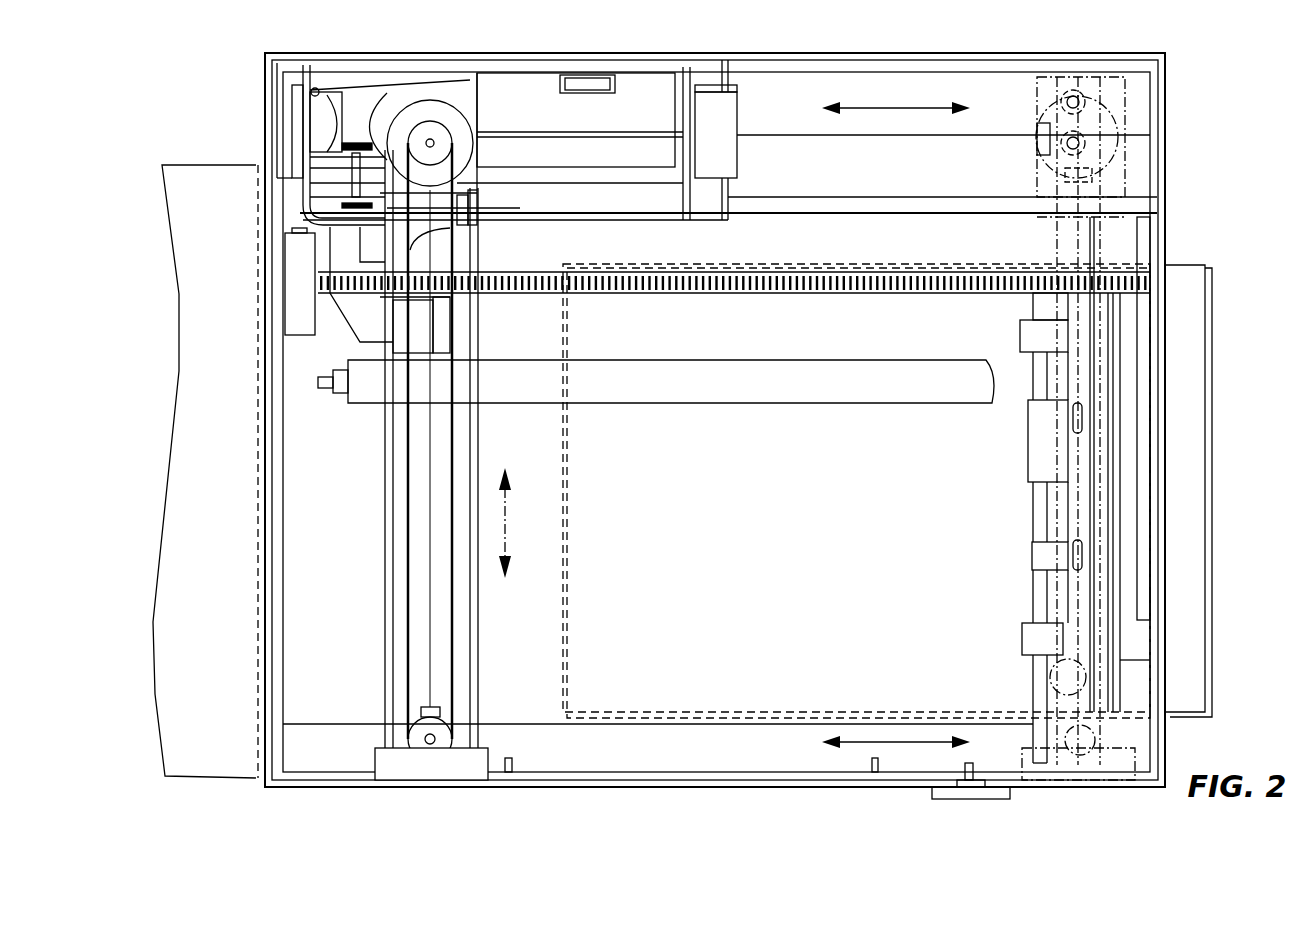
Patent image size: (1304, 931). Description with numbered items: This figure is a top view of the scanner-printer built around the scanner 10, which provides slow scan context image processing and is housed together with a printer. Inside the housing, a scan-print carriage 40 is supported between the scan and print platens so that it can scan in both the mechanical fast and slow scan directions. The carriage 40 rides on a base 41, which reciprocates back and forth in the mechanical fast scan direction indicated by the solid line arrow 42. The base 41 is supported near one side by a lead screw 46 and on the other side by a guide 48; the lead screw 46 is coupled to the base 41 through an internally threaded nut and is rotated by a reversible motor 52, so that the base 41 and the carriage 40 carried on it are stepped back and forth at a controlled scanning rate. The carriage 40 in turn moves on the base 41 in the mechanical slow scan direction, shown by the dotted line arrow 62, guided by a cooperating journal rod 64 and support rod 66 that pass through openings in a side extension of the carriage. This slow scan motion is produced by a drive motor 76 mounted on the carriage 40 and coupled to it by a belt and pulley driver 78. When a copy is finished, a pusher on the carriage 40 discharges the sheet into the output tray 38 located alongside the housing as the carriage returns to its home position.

The scanner 10 is at (1195, 136).
The output tray 38 is at (171, 425).
The scan-print carriage 40 is at (348, 120).
The base 41 is at (642, 100).
The solid line arrow 42 is at (895, 107).
The lead screw 46 is at (527, 280).
The guide 48 is at (622, 393).
The reversible motor 52 is at (294, 300).
The dotted line arrow 62 is at (512, 530).
The journal rod 64 is at (385, 528).
The support rod 66 is at (477, 623).
The drive motor 76 is at (463, 145).
The belt and pulley driver 78 is at (412, 443).